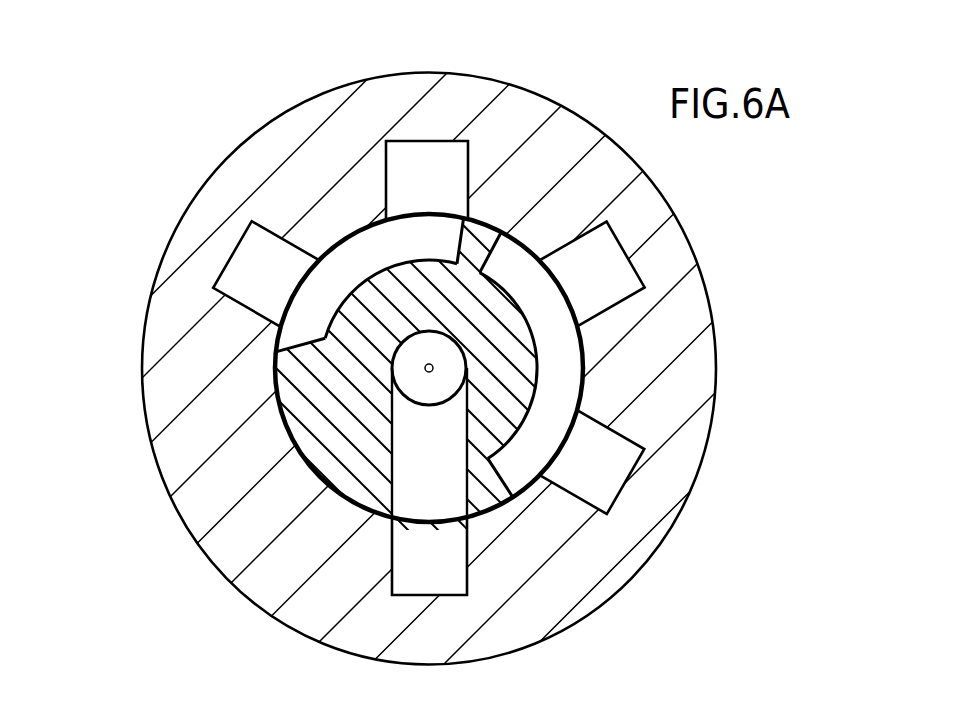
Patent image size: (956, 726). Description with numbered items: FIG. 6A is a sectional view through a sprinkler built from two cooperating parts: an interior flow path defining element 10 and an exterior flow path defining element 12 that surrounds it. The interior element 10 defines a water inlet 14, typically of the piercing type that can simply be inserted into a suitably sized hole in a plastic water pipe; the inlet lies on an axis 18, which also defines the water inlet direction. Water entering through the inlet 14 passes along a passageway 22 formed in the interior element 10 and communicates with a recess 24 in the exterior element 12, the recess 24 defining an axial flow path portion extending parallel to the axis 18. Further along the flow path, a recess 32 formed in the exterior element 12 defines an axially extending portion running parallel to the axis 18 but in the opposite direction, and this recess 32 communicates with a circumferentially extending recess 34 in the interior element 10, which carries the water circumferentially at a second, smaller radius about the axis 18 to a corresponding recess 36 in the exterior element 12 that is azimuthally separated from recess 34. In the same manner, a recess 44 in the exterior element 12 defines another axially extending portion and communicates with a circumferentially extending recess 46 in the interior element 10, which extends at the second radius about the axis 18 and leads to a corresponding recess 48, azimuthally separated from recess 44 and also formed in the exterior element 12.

The interior flow path defining element 10 is at (312, 366).
The exterior flow path defining element 12 is at (202, 425).
The water inlet 14 is at (452, 370).
The axis 18 is at (427, 367).
The passageway 22 is at (442, 447).
The recess 24 is at (404, 580).
The recess 32 is at (602, 472).
The circumferentially extending recess 34 is at (556, 345).
The recess 36 is at (612, 270).
The recess 44 is at (425, 158).
The circumferentially extending recess 46 is at (372, 257).
The recess 48 is at (250, 258).